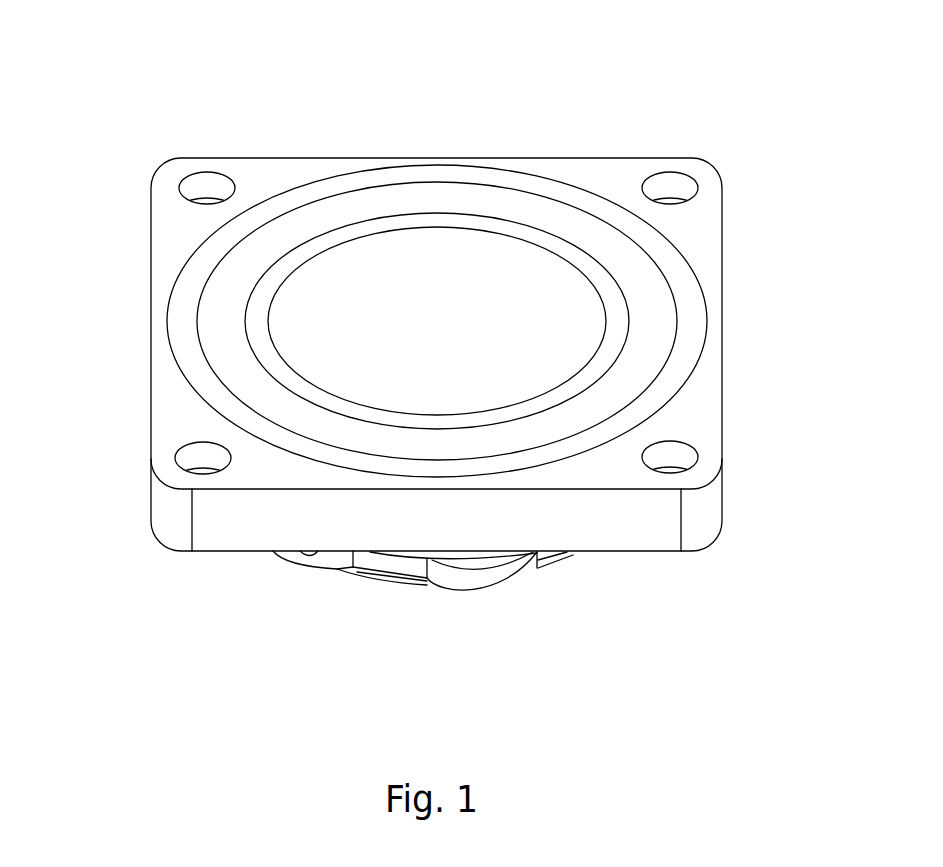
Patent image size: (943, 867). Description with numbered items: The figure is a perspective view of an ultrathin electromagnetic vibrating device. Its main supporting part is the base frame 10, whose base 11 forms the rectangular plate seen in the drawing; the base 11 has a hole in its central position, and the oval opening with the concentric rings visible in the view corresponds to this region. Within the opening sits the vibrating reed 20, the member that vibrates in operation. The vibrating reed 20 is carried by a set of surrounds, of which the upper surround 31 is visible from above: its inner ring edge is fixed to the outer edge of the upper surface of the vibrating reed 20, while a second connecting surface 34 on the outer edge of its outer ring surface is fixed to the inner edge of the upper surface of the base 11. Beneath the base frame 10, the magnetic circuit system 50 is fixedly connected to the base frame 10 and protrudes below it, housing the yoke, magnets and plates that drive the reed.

The base frame 10 is at (703, 110).
The base 11 is at (280, 170).
The vibrating reed 20 is at (417, 283).
The upper surround 31 is at (220, 307).
The second connecting surface 34 is at (185, 340).
The magnetic circuit system 50 is at (543, 593).